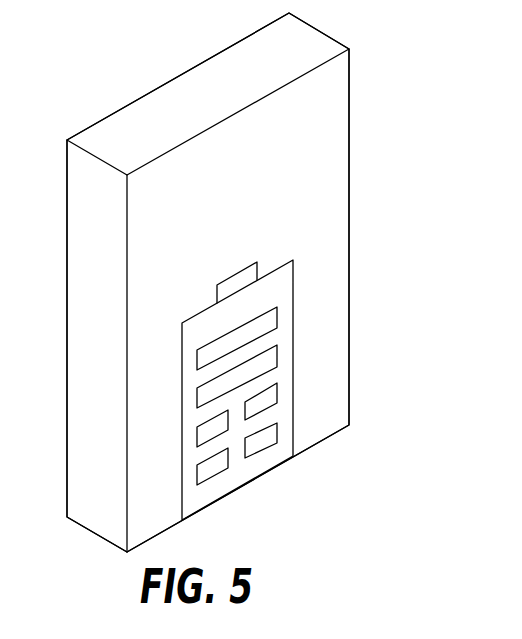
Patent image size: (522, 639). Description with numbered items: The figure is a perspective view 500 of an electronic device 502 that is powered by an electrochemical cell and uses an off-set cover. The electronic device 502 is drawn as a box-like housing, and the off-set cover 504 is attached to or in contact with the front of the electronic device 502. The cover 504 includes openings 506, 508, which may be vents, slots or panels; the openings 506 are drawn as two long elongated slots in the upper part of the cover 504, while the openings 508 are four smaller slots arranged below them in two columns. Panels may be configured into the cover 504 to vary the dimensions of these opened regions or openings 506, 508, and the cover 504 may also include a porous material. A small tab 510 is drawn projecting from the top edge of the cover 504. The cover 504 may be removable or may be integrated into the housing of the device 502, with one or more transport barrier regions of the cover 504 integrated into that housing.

The perspective view 500 is at (128, 38).
The electronic device 502 is at (311, 43).
The off-set cover 504 is at (278, 288).
The openings 506 is at (263, 320).
The openings 508 is at (258, 442).
The tab 510 is at (240, 280).